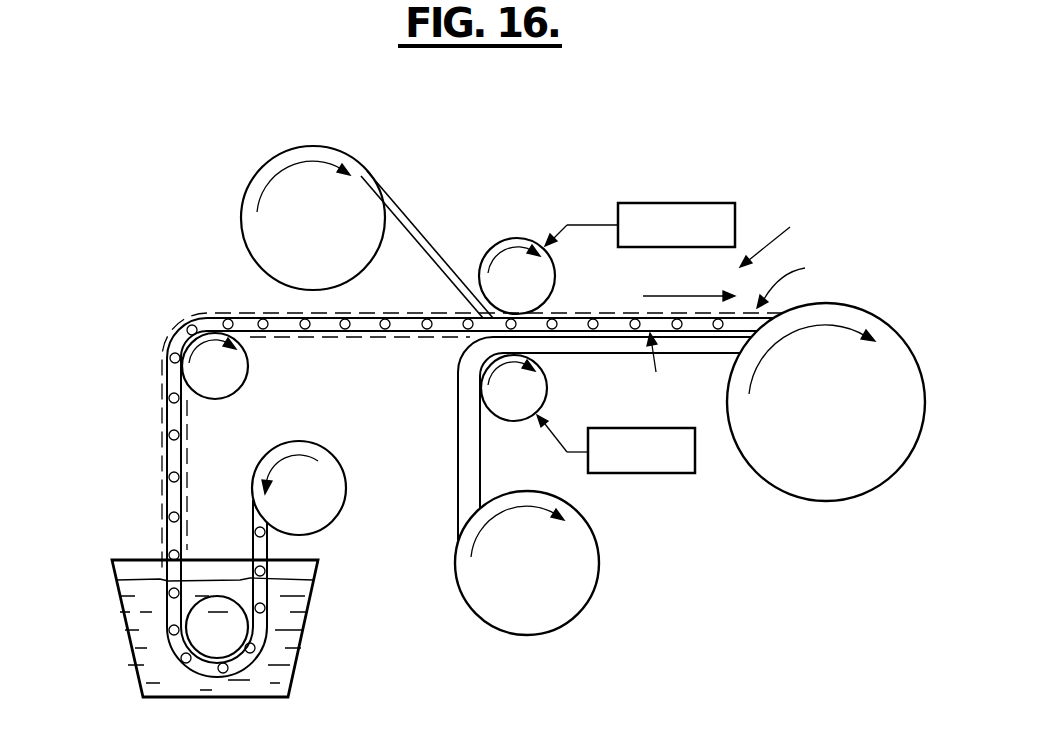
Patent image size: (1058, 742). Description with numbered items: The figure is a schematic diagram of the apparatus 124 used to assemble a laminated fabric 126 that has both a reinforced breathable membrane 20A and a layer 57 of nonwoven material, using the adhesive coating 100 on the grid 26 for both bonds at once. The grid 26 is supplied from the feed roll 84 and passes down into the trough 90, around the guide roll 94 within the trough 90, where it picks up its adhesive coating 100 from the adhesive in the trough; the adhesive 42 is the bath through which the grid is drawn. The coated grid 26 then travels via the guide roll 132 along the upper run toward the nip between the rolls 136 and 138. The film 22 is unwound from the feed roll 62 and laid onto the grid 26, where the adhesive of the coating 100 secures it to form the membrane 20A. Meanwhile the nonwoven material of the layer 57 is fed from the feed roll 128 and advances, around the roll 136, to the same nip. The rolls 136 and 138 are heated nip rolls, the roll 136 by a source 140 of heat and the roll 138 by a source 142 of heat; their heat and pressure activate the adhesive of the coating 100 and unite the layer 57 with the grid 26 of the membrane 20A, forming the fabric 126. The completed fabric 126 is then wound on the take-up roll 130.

The grid 26 is at (245, 315).
The adhesive coating 100 is at (160, 433).
The feed roll 62 is at (246, 191).
The film 22 is at (413, 217).
The guide roll 138 is at (516, 238).
The source of heat 142 is at (702, 203).
The apparatus 124 is at (788, 231).
The laminated fabric 126 is at (803, 276).
The take-up roll 130 is at (804, 413).
The guide roll 132 is at (242, 385).
The layer of nonwoven material 57 is at (590, 372).
The reinforced breathable membrane 20A is at (665, 369).
The guide roll 136 is at (507, 421).
The source of heat 140 is at (652, 473).
The feed roll 128 is at (505, 580).
The feed roll 84 is at (282, 508).
The trough 90 is at (313, 591).
The adhesive 42 is at (277, 667).
The guide roll 94 is at (228, 623).